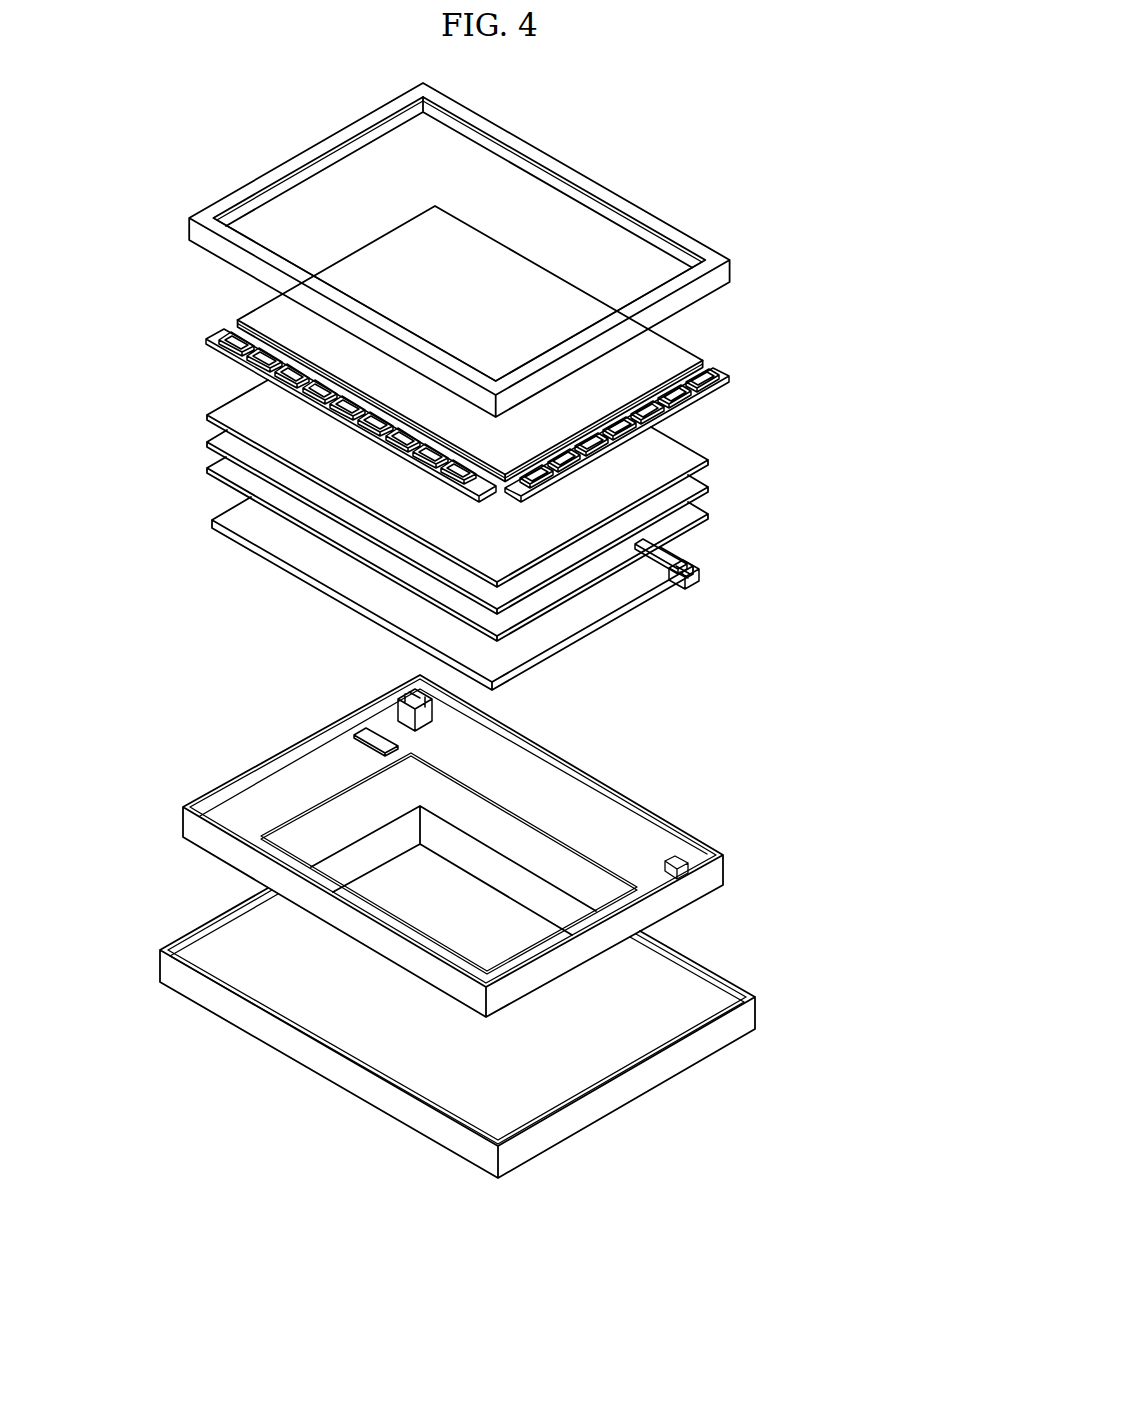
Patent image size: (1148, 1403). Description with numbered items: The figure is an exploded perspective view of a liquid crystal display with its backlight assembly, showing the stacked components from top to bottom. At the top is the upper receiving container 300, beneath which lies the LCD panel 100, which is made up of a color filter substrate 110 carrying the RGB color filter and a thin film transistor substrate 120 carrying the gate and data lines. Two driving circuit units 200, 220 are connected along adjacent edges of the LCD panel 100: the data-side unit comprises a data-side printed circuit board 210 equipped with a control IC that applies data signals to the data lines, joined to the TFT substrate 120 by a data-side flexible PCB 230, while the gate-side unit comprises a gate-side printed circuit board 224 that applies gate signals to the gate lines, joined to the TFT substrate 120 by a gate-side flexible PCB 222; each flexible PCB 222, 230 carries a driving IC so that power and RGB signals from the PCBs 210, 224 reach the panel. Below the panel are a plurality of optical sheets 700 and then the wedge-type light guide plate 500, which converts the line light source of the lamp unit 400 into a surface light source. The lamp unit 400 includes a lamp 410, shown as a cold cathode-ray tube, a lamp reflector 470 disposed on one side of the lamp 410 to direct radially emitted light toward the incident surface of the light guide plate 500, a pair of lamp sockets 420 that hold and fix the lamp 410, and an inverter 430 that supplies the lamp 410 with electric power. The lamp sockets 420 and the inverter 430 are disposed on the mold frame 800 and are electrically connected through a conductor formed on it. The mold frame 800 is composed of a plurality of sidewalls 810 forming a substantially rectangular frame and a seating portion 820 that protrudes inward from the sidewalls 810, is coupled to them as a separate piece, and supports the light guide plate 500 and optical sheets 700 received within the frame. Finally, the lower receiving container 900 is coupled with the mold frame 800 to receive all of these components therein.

The LCD panel 100 is at (551, 344).
The color filter substrate 110 is at (665, 354).
The thin film transistor substrate 120 is at (703, 364).
The driving circuit unit 200 is at (281, 390).
The data-side printed circuit board 210 is at (218, 341).
The data-side flexible printed circuit board 230 is at (240, 331).
The driving circuit unit 220 is at (684, 435).
The gate-side flexible printed circuit board 222 is at (710, 380).
The gate-side printed circuit board 224 is at (714, 402).
The upper receiving container 300 is at (735, 268).
The lamp unit 400 is at (601, 859).
The lamp 410 is at (697, 567).
The lamp sockets 420 is at (458, 736).
The inverter 430 is at (370, 738).
The lamp reflector 470 is at (680, 553).
The light guide plate 500 is at (633, 604).
The optical sheets 700 is at (709, 514).
The mold frame 800 is at (457, 846).
The sidewalls 810 is at (192, 824).
The seating portion 820 is at (286, 803).
The lower receiving container 900 is at (748, 1023).